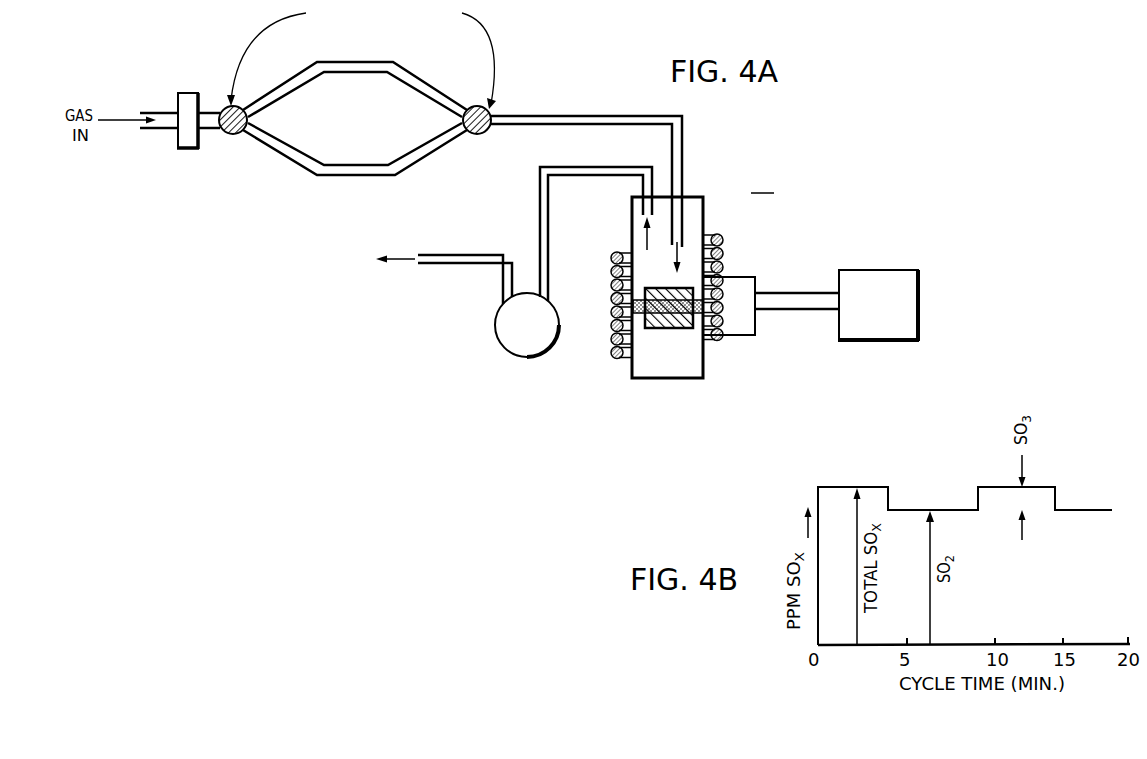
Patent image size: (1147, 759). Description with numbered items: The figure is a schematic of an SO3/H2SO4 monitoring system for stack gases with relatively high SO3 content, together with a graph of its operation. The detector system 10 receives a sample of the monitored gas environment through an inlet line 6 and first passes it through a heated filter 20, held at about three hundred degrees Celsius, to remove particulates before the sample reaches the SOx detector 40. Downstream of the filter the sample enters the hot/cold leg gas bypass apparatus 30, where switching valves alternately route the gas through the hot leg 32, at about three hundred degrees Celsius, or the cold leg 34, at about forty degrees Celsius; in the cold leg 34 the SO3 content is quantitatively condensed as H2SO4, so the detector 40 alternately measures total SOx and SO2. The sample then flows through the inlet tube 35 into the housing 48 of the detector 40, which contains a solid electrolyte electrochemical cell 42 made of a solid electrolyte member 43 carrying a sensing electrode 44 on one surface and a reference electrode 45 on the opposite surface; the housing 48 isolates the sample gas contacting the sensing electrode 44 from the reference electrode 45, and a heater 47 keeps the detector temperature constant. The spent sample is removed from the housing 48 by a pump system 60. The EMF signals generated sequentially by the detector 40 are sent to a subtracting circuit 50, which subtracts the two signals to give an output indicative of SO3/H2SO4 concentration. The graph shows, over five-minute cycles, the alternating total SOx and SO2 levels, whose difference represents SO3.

The gas inlet line 6 is at (125, 116).
The detector system 10 is at (292, 302).
The heated filter 20 is at (181, 150).
The hot/cold leg gas bypass apparatus 30 is at (365, 143).
The hot leg 32 is at (372, 73).
The cold leg 34 is at (330, 176).
The inlet tube 35 is at (684, 158).
The SOx detector 40 is at (714, 317).
The solid electrolyte electrochemical cell 42 is at (685, 409).
The solid electrolyte member 43 is at (638, 305).
The sensing electrode 44 is at (654, 290).
The reference electrode 45 is at (662, 330).
The heater 47 is at (613, 257).
The housing 48 is at (632, 204).
The subtracting circuit 50 is at (910, 330).
The pump system 60 is at (468, 382).